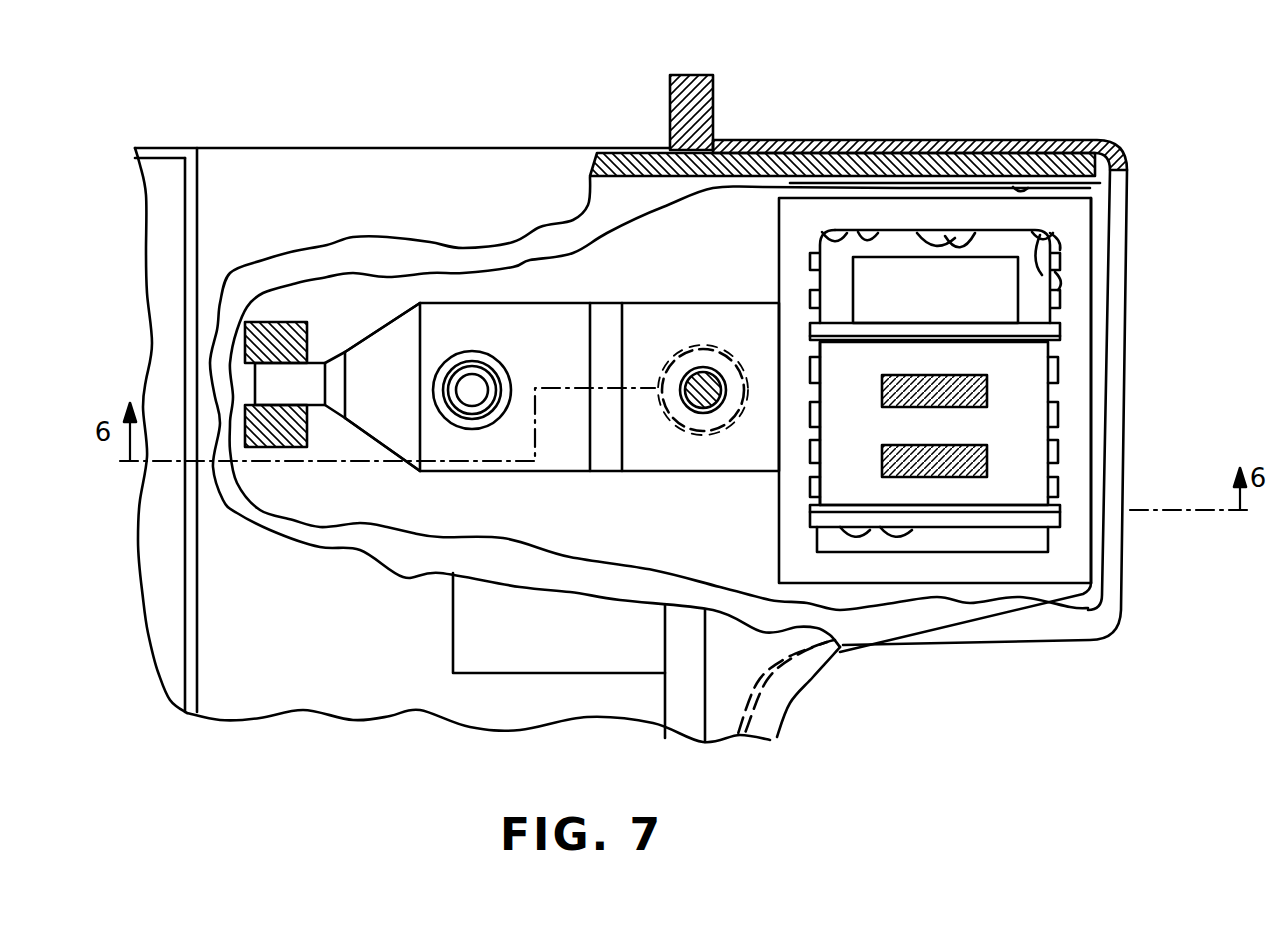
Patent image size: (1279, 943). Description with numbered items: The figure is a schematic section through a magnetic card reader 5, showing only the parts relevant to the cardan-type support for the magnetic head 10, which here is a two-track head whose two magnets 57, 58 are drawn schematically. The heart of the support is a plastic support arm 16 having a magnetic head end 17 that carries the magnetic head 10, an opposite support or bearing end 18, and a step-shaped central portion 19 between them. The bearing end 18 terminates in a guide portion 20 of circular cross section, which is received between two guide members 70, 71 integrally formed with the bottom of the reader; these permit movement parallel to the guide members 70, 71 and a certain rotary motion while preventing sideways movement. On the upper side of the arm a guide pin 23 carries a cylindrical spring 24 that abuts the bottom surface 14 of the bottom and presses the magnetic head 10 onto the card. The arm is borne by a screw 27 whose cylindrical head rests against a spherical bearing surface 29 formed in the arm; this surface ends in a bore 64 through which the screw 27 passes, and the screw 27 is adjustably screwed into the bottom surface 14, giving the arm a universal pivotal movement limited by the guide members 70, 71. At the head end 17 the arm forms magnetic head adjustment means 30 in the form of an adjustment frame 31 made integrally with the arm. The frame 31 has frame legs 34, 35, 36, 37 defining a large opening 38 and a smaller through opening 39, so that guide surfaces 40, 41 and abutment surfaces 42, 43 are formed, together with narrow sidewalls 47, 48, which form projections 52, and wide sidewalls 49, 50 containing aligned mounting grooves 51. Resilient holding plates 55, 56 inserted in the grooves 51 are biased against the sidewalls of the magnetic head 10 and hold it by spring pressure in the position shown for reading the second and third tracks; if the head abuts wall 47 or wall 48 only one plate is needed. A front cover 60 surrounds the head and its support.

The magnetic card reader 5 is at (1143, 131).
The magnetic head 10 is at (852, 455).
The bottom surface 14 is at (523, 287).
The support arm 16 is at (478, 471).
The magnetic head end 17 is at (1093, 295).
The support end 18 is at (375, 332).
The central portion 19 is at (600, 475).
The guide portion 20 is at (268, 387).
The guide pin 23 is at (467, 387).
The cylindrical spring 24 is at (482, 357).
The screw 27 is at (687, 383).
The spherical bearing surface 29 is at (740, 418).
The magnetic head adjustment means 30 is at (1095, 563).
The adjustment frame 31 is at (1013, 187).
The frame leg 34 is at (905, 237).
The frame leg 35 is at (1070, 393).
The frame leg 36 is at (1015, 565).
The frame leg 37 is at (793, 510).
The large opening 38 is at (866, 235).
The small opening 39 is at (970, 257).
The guide surface 40 is at (1028, 305).
The guide surface 41 is at (817, 303).
The abutment surface 42 is at (935, 240).
The abutment surface 43 is at (838, 535).
The narrow sidewall 47 is at (1050, 235).
The narrow sidewall 48 is at (880, 550).
The wide sidewall 49 is at (820, 236).
The wide sidewall 50 is at (1060, 275).
The mounting grooves 51 is at (830, 232).
The projections 52 is at (978, 240).
The holding plate 55 is at (1062, 333).
The holding plate 56 is at (1060, 537).
The magnet 57 is at (987, 390).
The magnet 58 is at (987, 453).
The front cover 60 is at (1083, 143).
The bore 64 is at (703, 405).
The guide member 70 is at (262, 323).
The guide member 71 is at (295, 445).